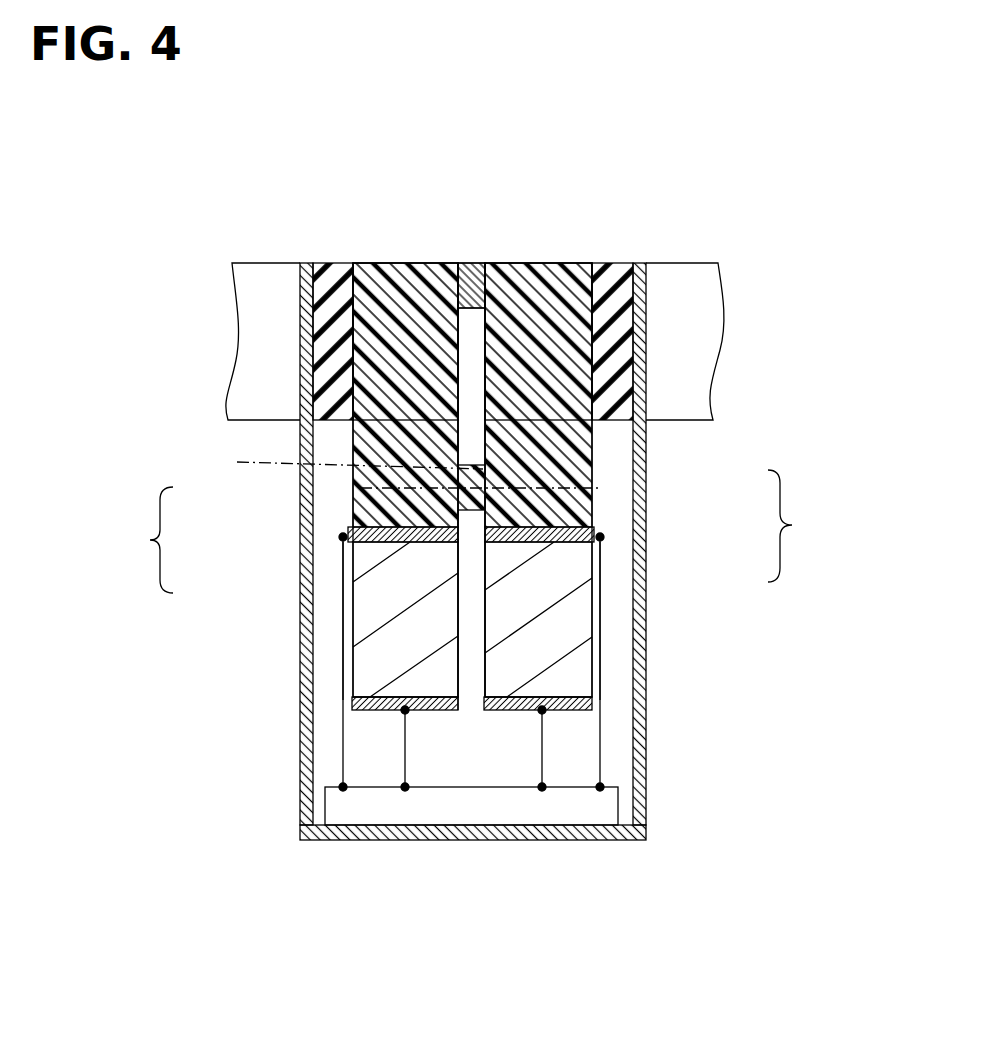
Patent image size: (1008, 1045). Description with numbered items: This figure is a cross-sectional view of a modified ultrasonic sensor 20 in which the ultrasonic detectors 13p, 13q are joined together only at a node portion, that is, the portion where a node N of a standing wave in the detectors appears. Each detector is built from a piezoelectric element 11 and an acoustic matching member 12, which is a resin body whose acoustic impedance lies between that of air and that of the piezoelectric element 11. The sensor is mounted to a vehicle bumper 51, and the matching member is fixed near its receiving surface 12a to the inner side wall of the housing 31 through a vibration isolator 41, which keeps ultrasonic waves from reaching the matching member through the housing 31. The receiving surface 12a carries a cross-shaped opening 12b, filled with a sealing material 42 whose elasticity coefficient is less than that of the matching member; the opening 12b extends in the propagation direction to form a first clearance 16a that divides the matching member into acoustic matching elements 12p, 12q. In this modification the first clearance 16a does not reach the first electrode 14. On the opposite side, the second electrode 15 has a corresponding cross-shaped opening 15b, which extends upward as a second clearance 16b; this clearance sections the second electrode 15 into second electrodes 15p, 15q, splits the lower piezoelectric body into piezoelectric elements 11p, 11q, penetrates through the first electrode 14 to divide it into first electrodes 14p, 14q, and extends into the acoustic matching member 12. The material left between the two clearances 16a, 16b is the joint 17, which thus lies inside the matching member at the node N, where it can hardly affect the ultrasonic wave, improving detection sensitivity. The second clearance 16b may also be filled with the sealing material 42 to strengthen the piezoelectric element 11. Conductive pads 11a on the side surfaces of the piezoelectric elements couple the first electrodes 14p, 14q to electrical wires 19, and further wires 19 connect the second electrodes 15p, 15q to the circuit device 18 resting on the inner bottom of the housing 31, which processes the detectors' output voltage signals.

The piezoelectric element 11 is at (464, 606).
The conductive pad 11a is at (348, 531).
The piezoelectric element 11p is at (357, 552).
The piezoelectric element 11q is at (578, 556).
The acoustic matching member 12 is at (462, 360).
The receiving surface 12a is at (380, 264).
The opening 12b is at (477, 264).
The acoustic matching element 12p is at (353, 499).
The acoustic matching element 12q is at (593, 478).
The ultrasonic detector 13p is at (273, 480).
The ultrasonic detector 13q is at (671, 480).
The first electrode 14 is at (469, 616).
The first electrode 14p is at (343, 565).
The first electrode 14q is at (543, 547).
The second electrode 15 is at (471, 793).
The second electrode 15p is at (353, 700).
The second electrode 15q is at (592, 700).
The opening 15b is at (459, 702).
The first clearance 16a is at (483, 346).
The second clearance 16b is at (487, 648).
The joint 17 is at (490, 481).
The circuit device 18 is at (345, 805).
The electrical wire 19 is at (343, 745).
The ultrasonic sensor 20 is at (472, 532).
The housing 31 is at (645, 806).
The vibration isolator 41 is at (328, 267).
The sealing material 42 is at (465, 267).
The bumper 51 is at (258, 268).
The node N is at (411, 468).